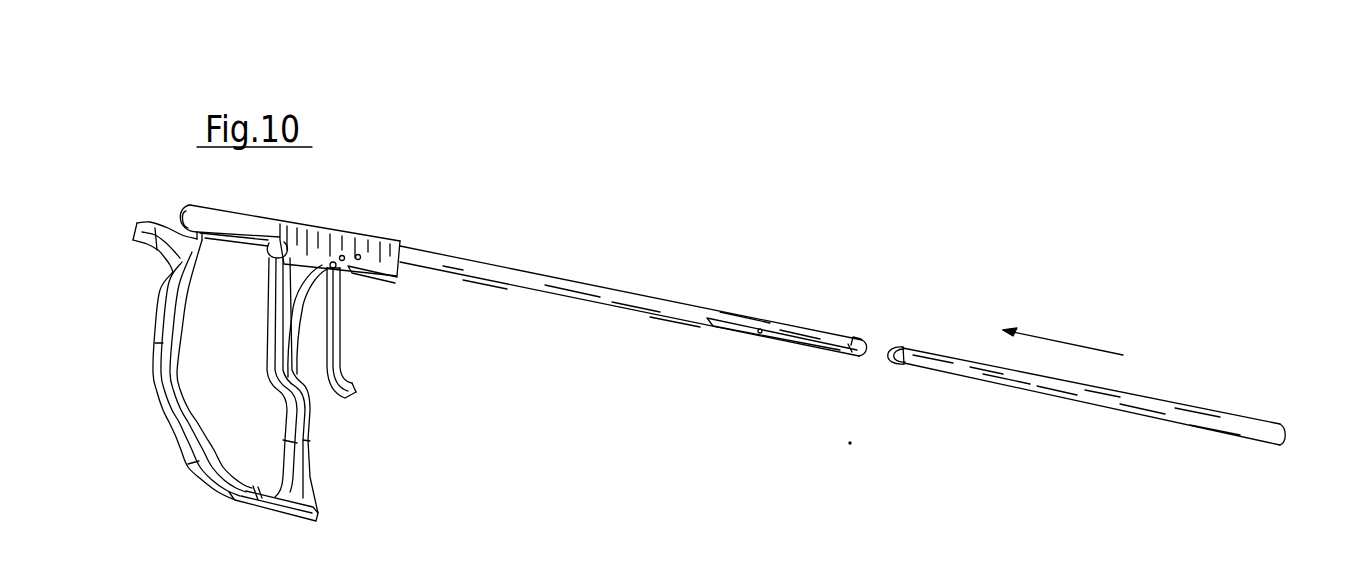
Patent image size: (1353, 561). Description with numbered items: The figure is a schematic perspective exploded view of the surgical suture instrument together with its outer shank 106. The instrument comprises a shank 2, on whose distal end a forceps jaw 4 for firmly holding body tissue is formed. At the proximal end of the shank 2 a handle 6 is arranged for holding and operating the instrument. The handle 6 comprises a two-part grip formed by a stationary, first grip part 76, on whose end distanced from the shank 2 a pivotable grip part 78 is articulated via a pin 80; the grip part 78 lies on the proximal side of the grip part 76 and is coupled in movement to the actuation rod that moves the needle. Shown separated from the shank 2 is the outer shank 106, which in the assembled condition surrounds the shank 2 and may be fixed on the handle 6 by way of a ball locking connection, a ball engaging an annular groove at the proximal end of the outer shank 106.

The shank 2 is at (567, 288).
The forceps jaw 4 is at (856, 334).
The handle 6 is at (228, 389).
The first grip part 76 is at (297, 445).
The pivotable grip part 78 is at (176, 320).
The pin 80 is at (253, 487).
The outer shank 106 is at (1148, 409).